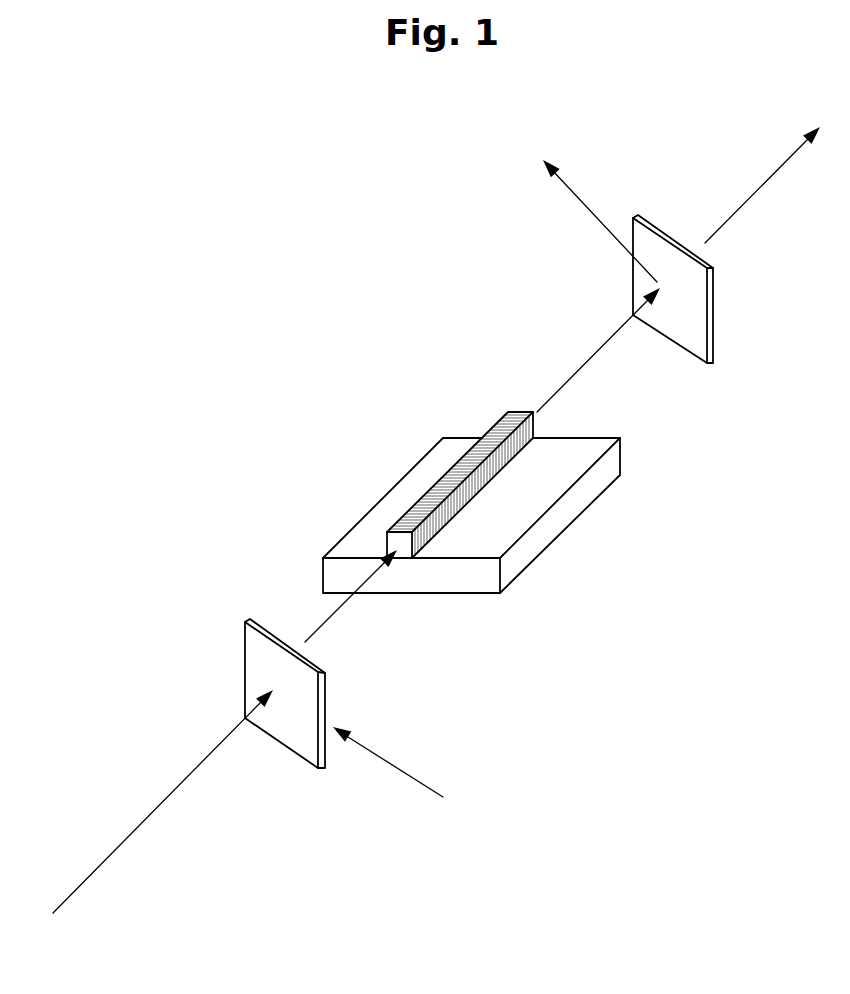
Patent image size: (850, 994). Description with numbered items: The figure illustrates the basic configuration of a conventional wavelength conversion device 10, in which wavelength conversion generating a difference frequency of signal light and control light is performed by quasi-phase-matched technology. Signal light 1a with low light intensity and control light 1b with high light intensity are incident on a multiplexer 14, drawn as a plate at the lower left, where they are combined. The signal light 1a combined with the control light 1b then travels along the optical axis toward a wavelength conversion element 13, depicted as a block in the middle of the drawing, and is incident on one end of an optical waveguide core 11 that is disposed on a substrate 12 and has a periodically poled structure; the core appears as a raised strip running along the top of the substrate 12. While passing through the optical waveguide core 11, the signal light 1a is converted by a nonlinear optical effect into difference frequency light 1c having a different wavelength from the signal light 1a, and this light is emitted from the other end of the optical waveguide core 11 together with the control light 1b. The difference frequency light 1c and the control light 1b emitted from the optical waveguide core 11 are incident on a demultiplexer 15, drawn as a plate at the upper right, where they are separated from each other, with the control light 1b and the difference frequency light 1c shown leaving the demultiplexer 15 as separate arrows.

The wavelength conversion device 10 is at (736, 620).
The optical waveguide core 11 is at (502, 415).
The substrate 12 is at (390, 490).
The wavelength conversion element 13 is at (507, 600).
The multiplexer 14 is at (323, 703).
The demultiplexer 15 is at (640, 218).
The signal light 1a is at (68, 902).
The control light 1b is at (393, 772).
The difference frequency light 1c is at (813, 127).